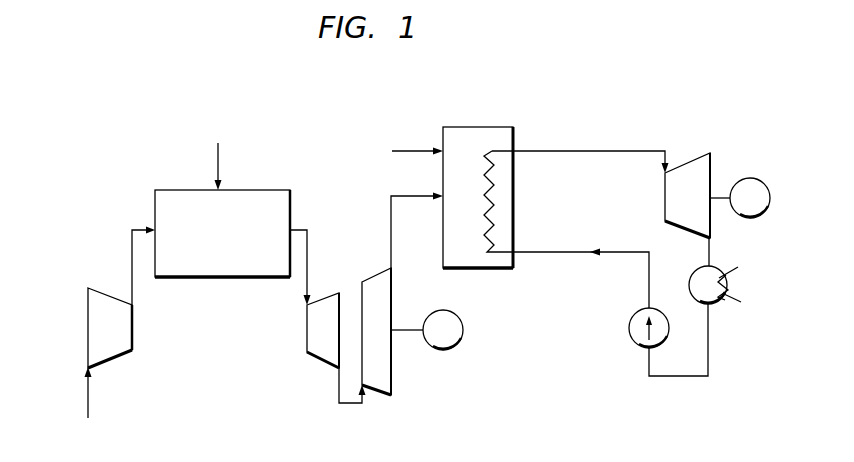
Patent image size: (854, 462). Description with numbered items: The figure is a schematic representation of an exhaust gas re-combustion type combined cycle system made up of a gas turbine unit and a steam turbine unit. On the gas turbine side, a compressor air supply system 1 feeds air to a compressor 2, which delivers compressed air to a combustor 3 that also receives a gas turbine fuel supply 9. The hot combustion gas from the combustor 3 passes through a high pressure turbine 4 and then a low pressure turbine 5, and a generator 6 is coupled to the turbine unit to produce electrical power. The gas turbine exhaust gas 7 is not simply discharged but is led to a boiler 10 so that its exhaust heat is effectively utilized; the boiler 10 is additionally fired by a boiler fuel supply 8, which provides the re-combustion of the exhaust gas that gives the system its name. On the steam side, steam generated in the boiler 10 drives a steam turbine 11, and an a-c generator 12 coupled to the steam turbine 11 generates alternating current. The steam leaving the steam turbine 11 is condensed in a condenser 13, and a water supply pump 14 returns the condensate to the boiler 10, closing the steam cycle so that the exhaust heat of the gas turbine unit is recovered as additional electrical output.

The compressor air supply system 1 is at (98, 397).
The compressor 2 is at (121, 298).
The combustor 3 is at (277, 172).
The high pressure turbine 4 is at (314, 299).
The low pressure turbine 5 is at (365, 335).
The generator 6 is at (427, 330).
The gas turbine exhaust gas 7 is at (414, 180).
The boiler fuel supply 8 is at (421, 146).
The gas turbine fuel supply 9 is at (220, 173).
The boiler 10 is at (511, 122).
The steam turbine 11 is at (601, 194).
The a-c generator 12 is at (740, 198).
The condenser 13 is at (721, 305).
The water supply pump 14 is at (642, 307).